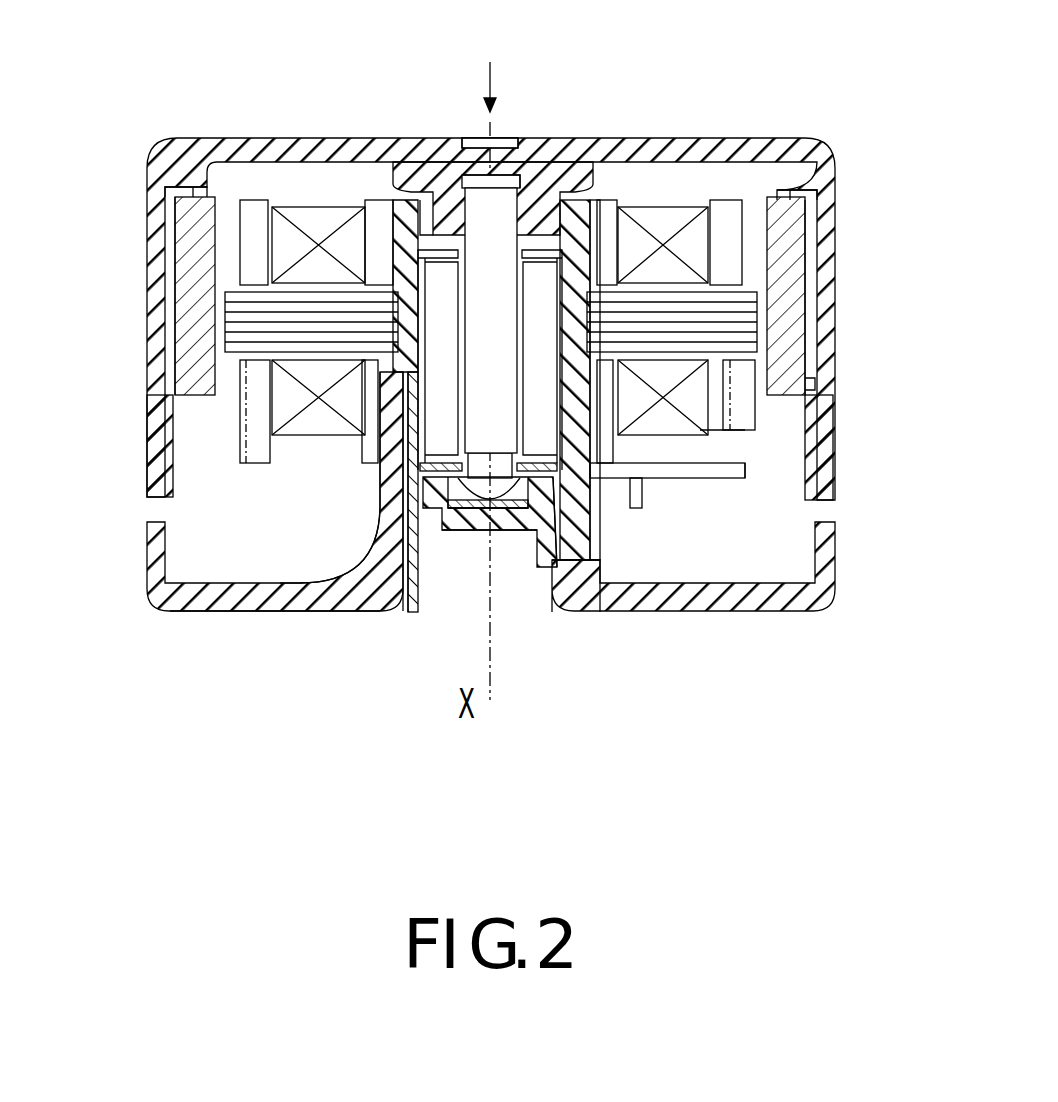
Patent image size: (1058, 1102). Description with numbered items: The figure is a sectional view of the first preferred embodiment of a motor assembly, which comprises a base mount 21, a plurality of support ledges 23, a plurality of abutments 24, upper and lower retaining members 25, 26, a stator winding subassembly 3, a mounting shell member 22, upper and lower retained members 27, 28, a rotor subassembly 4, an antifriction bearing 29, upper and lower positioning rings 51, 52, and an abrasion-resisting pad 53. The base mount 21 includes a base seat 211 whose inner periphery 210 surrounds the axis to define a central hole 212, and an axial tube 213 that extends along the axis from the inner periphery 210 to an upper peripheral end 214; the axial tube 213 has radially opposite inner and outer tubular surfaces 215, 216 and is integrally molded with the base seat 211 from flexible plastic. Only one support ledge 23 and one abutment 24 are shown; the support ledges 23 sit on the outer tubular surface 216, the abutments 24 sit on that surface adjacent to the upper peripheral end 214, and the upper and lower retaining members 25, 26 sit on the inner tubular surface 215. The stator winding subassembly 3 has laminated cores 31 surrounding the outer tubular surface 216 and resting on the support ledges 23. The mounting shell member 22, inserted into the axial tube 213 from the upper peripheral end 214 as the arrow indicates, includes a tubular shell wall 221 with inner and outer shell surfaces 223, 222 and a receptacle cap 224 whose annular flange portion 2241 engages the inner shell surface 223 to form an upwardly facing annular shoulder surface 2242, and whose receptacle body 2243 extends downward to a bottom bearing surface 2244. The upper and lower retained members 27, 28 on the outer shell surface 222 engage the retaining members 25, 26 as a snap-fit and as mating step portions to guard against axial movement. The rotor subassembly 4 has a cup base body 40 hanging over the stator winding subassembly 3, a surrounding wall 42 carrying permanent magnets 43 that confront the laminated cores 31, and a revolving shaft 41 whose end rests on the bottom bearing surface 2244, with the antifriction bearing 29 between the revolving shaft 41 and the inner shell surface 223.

The rotor subassembly 4 is at (826, 138).
The cup base body 40 is at (727, 138).
The revolving shaft 41 is at (477, 138).
The surrounding wall 42 is at (835, 203).
The permanent magnets 43 is at (828, 378).
The stator winding subassembly 3 is at (760, 245).
The laminated cores 31 is at (790, 330).
The base mount 21 is at (134, 552).
The inner periphery 210 is at (402, 612).
The base seat 211 is at (232, 612).
The central hole 212 is at (408, 612).
The axial tube 213 is at (293, 612).
The upper peripheral end 214 is at (395, 138).
The inner tubular surface 215 is at (388, 440).
The outer tubular surface 216 is at (353, 413).
The mounting shell member 22 is at (434, 612).
The tubular shell wall 221 is at (530, 252).
The outer shell surface 222 is at (400, 333).
The inner shell surface 223 is at (400, 313).
The receptacle cap 224 is at (458, 541).
The annular flange portion 2241 is at (575, 505).
The annular shoulder surface 2242 is at (410, 500).
The receptacle body 2243 is at (493, 612).
The bottom bearing surface 2244 is at (514, 669).
The support ledges 23 is at (373, 382).
The abutments 24 is at (590, 258).
The upper retaining member 25 is at (392, 200).
The lower retaining member 26 is at (498, 527).
The upper retained member 27 is at (397, 258).
The lower retained member 28 is at (572, 612).
The antifriction bearing 29 is at (538, 412).
The upper positioning ring 51 is at (562, 216).
The lower positioning ring 52 is at (557, 508).
The abrasion-resisting pad 53 is at (617, 612).